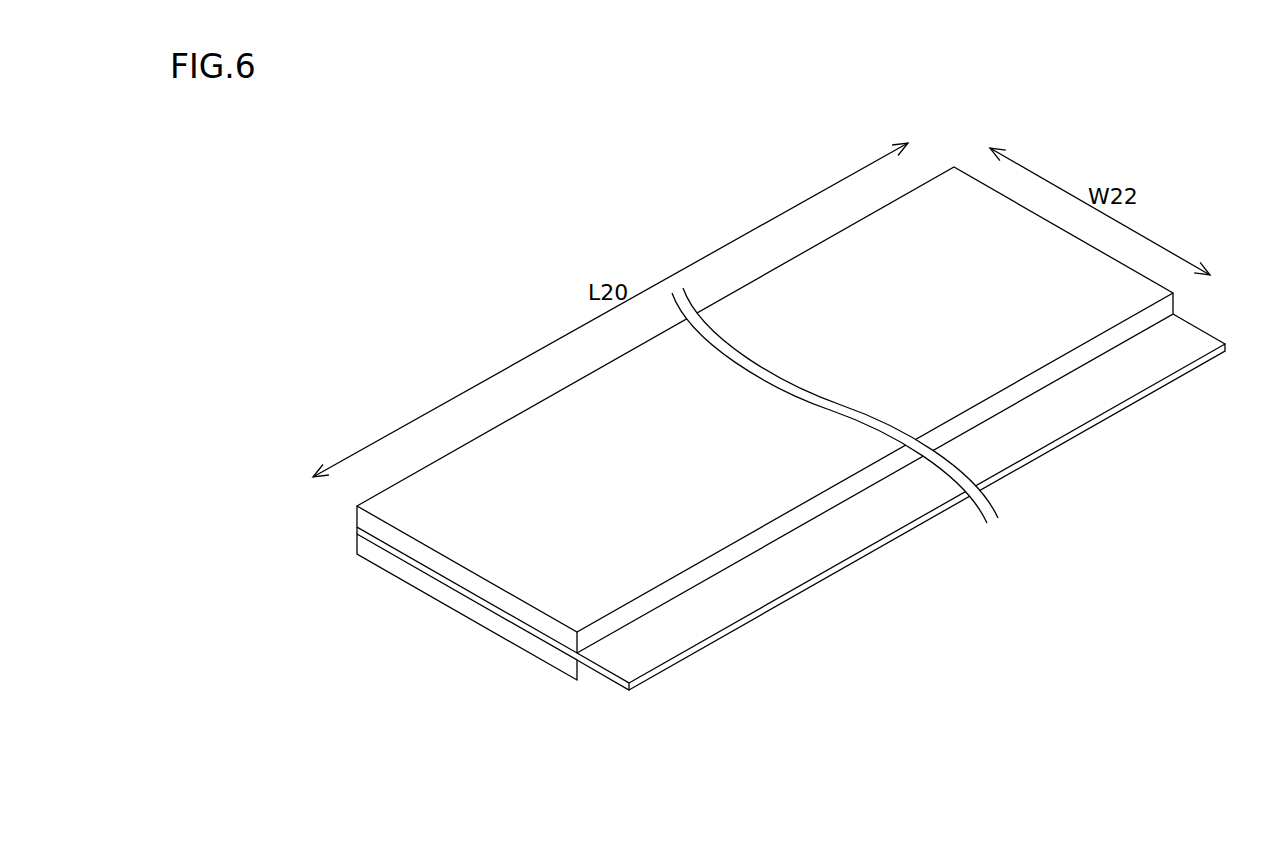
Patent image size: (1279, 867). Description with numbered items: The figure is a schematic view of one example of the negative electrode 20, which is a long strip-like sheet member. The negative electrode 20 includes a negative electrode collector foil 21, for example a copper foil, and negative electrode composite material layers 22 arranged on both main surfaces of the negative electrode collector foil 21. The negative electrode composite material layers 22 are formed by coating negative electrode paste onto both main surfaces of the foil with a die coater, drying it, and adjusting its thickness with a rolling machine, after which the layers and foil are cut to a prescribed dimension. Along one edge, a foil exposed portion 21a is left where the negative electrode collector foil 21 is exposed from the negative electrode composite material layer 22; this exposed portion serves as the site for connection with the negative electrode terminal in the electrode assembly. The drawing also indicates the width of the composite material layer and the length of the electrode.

The negative electrode 20 is at (762, 464).
The negative electrode collector foil 21 is at (791, 535).
The foil exposed portion 21a is at (1062, 402).
The negative electrode composite material layer 22 is at (463, 577).